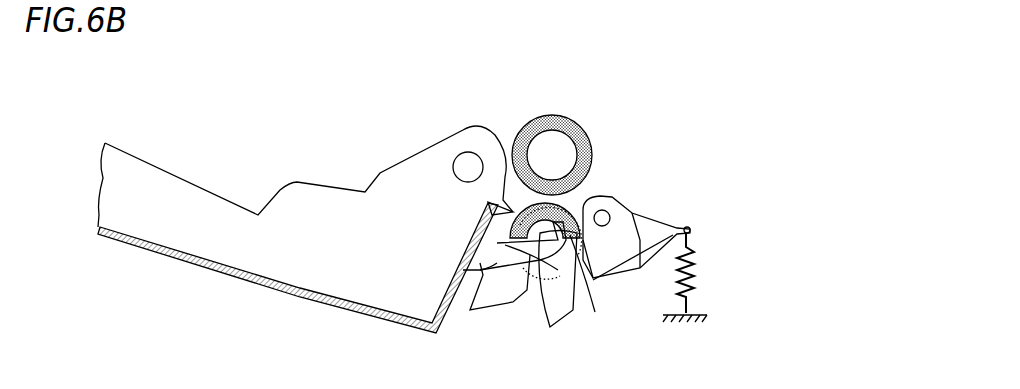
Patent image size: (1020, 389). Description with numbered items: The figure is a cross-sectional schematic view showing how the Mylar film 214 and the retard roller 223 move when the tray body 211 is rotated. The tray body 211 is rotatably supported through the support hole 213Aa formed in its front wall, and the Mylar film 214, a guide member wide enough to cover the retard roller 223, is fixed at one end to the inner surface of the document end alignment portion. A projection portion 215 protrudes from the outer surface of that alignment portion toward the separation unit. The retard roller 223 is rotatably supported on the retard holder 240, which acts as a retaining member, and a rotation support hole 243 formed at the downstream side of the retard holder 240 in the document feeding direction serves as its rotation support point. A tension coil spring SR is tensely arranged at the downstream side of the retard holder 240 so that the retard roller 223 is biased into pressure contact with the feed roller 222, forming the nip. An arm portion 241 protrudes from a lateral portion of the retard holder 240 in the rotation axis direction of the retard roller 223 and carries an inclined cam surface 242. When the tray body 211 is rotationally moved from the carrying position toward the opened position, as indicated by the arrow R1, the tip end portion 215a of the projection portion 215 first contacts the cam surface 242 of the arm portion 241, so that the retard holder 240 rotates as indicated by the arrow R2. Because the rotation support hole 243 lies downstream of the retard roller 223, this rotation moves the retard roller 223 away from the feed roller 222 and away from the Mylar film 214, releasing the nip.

The tray body 211 is at (255, 287).
The support hole 213Aa is at (465, 167).
The Mylar film 214 is at (500, 204).
The projection portion 215 is at (510, 243).
The tip end portion 215a is at (463, 270).
The feed roller 222 is at (535, 128).
The retard roller 223 is at (593, 197).
The retard holder 240 is at (598, 258).
The arm portion 241 is at (553, 303).
The cam surface 242 is at (530, 287).
The rotation support hole 243 is at (617, 208).
The tension coil spring SR is at (695, 267).
The arrow R1 is at (280, 232).
The arrow R2 is at (568, 260).